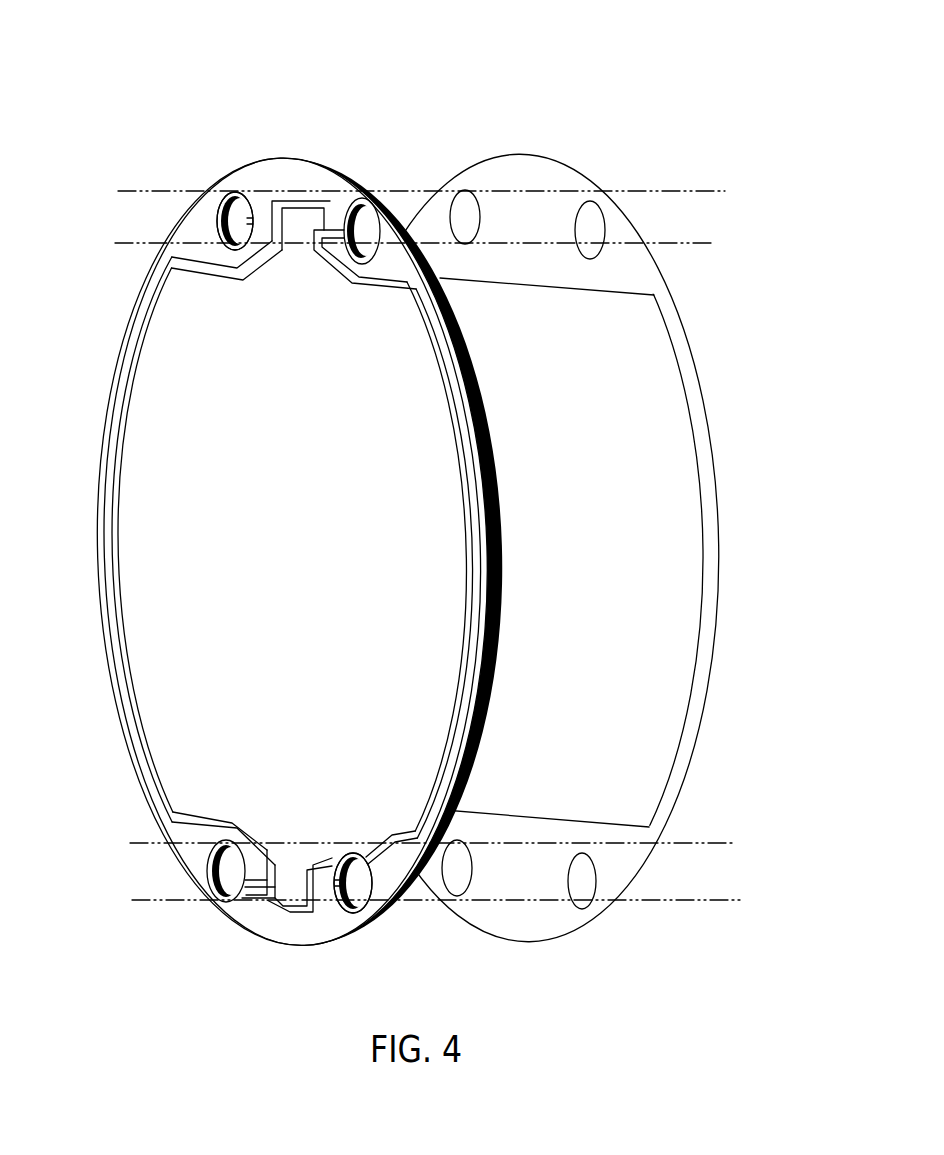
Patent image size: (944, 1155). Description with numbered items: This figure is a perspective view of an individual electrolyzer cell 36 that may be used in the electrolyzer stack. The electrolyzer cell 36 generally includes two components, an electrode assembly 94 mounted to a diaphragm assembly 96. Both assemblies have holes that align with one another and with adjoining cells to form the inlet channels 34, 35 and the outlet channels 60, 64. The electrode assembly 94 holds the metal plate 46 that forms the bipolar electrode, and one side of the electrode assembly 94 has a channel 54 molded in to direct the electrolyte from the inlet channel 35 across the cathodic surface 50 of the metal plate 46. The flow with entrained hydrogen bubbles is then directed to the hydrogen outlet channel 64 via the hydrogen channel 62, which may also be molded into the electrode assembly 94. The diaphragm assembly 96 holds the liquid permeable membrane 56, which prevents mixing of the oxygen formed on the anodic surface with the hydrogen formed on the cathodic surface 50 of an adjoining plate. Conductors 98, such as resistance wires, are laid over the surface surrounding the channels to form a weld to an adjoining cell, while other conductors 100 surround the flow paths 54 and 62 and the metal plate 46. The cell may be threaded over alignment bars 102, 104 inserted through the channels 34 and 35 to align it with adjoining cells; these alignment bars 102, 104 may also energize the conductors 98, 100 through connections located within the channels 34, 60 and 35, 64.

The electrolyzer cell 36 is at (175, 85).
The inlet channel 34 is at (230, 190).
The conductors 98 is at (247, 193).
The hydrogen channel 62 is at (303, 210).
The hydrogen outlet channel 64 is at (368, 222).
The diaphragm assembly 96 is at (556, 160).
The electrode assembly 94 is at (143, 305).
The liquid permeable membrane 56 is at (648, 372).
The metal plate 46 is at (160, 420).
The conductors 100 is at (468, 735).
The cathodic surface 50 is at (143, 675).
The alignment bar 102 is at (130, 191).
The alignment bar 104 is at (158, 903).
The inlet channel 35 is at (227, 898).
The channel 54 is at (290, 903).
The outlet channel 60 is at (368, 882).